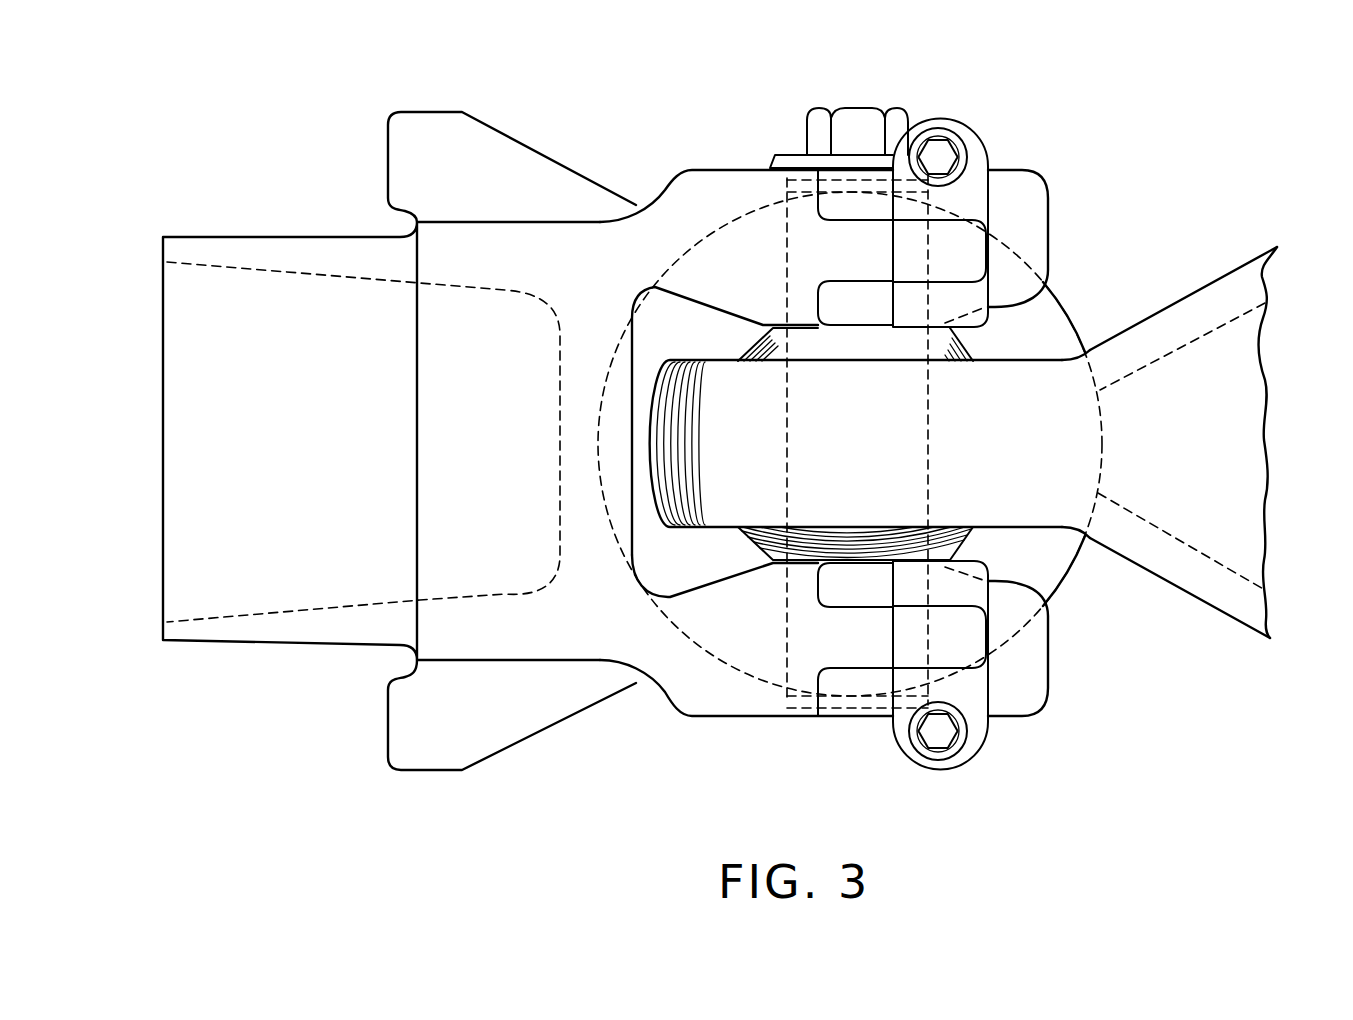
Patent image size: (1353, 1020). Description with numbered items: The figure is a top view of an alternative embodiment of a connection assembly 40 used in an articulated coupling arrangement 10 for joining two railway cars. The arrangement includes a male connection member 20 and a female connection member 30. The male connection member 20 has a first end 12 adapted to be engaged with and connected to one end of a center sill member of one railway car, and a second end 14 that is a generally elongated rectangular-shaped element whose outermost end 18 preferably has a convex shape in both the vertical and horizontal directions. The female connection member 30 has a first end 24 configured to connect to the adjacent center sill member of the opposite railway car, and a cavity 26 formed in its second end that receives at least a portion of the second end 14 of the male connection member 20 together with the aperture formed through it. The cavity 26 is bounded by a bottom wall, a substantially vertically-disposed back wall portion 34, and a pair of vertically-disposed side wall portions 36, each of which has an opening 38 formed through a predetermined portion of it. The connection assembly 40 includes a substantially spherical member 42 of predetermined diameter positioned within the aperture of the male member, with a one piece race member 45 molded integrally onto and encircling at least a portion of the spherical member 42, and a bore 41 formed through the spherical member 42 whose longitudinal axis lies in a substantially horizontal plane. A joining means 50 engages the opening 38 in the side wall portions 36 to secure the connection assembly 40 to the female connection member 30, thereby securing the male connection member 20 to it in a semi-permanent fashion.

The articulated coupling arrangement 10 is at (988, 137).
The first end 12 is at (1256, 390).
The second end 14 is at (1070, 508).
The outermost end 18 is at (650, 445).
The male connection member 20 is at (1175, 282).
The first end 24 is at (254, 248).
The cavity 26 is at (697, 340).
The female connection member 30 is at (540, 135).
The back wall portion 34 is at (637, 523).
The side wall portions 36 is at (695, 183).
The opening 38 is at (792, 283).
The connection assembly 40 is at (983, 345).
The bore 41 is at (925, 417).
The spherical member 42 is at (965, 548).
The race member 45 is at (902, 480).
The joining means 50 is at (882, 732).